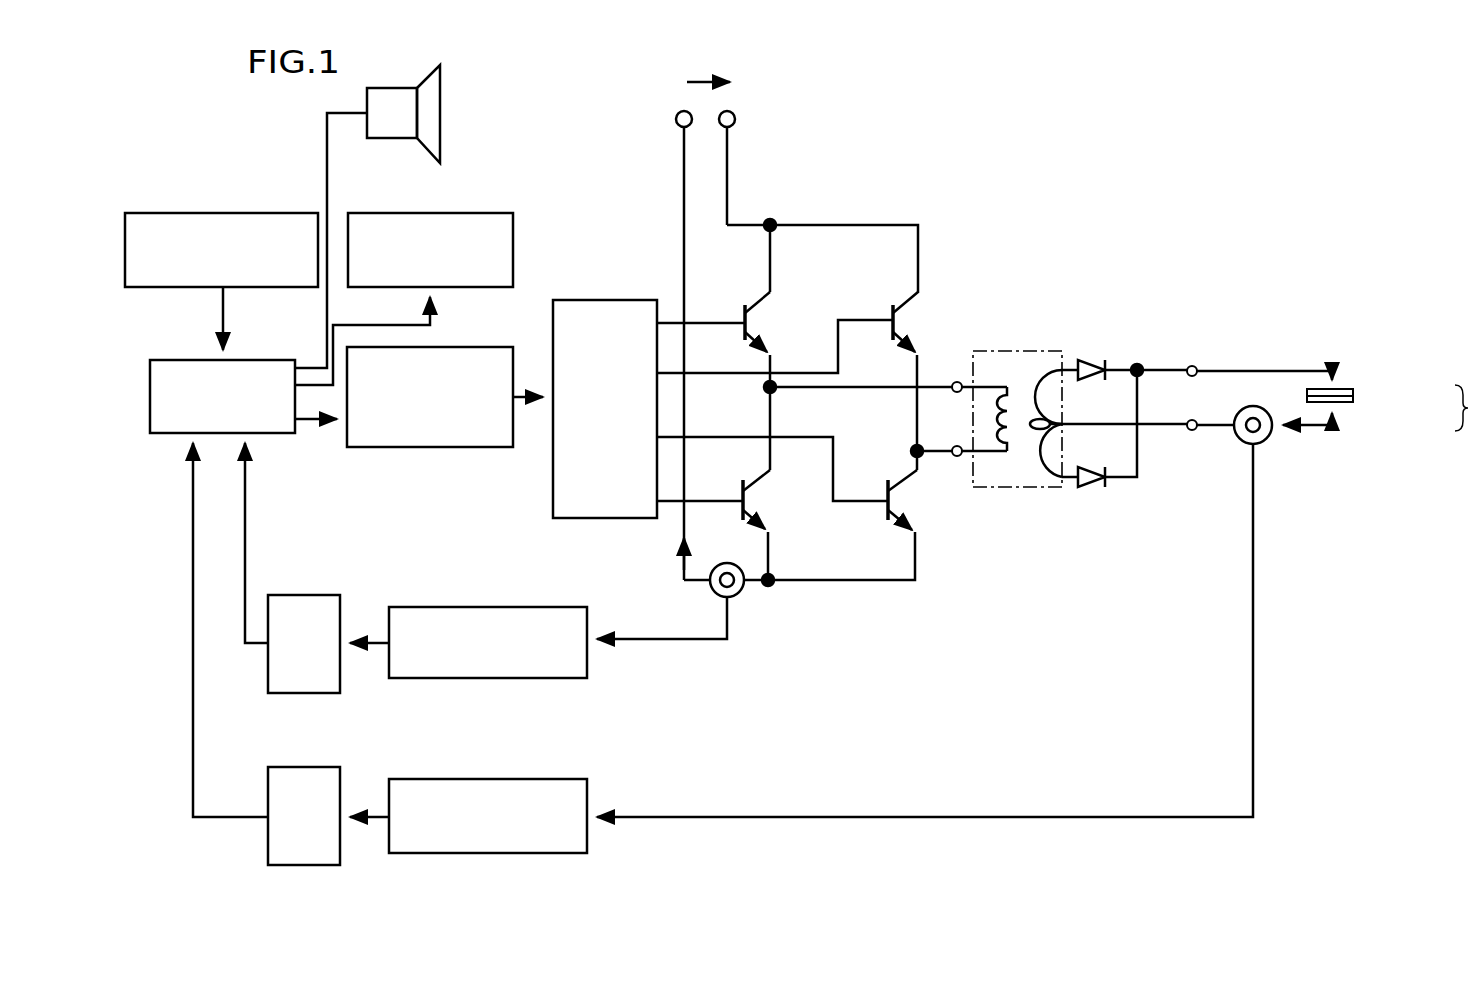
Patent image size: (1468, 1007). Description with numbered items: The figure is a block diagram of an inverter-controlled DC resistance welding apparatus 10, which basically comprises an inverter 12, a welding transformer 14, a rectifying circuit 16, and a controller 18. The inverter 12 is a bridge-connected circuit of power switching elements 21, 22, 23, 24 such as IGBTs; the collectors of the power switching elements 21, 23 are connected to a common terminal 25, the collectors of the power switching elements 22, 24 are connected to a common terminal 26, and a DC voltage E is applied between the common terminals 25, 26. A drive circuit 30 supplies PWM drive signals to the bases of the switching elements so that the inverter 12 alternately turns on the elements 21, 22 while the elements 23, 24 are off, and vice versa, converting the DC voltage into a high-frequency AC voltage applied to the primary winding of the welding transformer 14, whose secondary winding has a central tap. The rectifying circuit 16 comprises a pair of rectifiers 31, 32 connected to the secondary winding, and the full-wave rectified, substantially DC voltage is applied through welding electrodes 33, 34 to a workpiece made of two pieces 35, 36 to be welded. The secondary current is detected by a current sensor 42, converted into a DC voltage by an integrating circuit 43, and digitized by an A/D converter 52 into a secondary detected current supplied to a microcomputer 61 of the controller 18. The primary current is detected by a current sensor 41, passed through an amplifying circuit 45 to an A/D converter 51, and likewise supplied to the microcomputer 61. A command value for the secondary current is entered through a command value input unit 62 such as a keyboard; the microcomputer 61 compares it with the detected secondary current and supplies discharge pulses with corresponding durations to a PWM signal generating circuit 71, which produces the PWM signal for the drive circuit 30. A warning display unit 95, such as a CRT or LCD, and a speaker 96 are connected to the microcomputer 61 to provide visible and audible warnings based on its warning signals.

The inverter-controlled DC resistance welding apparatus 10 is at (981, 116).
The inverter 12 is at (922, 207).
The welding transformer 14 is at (1010, 351).
The rectifying circuit 16 is at (1189, 320).
The controller 18 is at (553, 271).
The power switching element 21 is at (765, 325).
The power switching element 22 is at (918, 503).
The power switching element 23 is at (923, 318).
The power switching element 24 is at (765, 497).
The common terminal 25 is at (735, 108).
The common terminal 26 is at (680, 110).
The drive circuit 30 is at (631, 299).
The rectifier 31 is at (1096, 361).
The rectifier 32 is at (1095, 488).
The welding electrode 33 is at (1338, 383).
The welding electrode 34 is at (1338, 407).
The piece to be welded 35 is at (1355, 392).
The piece to be welded 36 is at (1355, 400).
The current sensor 41 is at (745, 590).
The current sensor 42 is at (1240, 440).
The integrating circuit 43 is at (551, 779).
The amplifying circuit 45 is at (551, 607).
The A/D converter 51 is at (315, 595).
The A/D converter 52 is at (315, 767).
The microcomputer 61 is at (162, 359).
The command value input unit 62 is at (281, 212).
The PWM signal generating circuit 71 is at (491, 347).
The warning display unit 95 is at (491, 212).
The speaker 96 is at (392, 140).